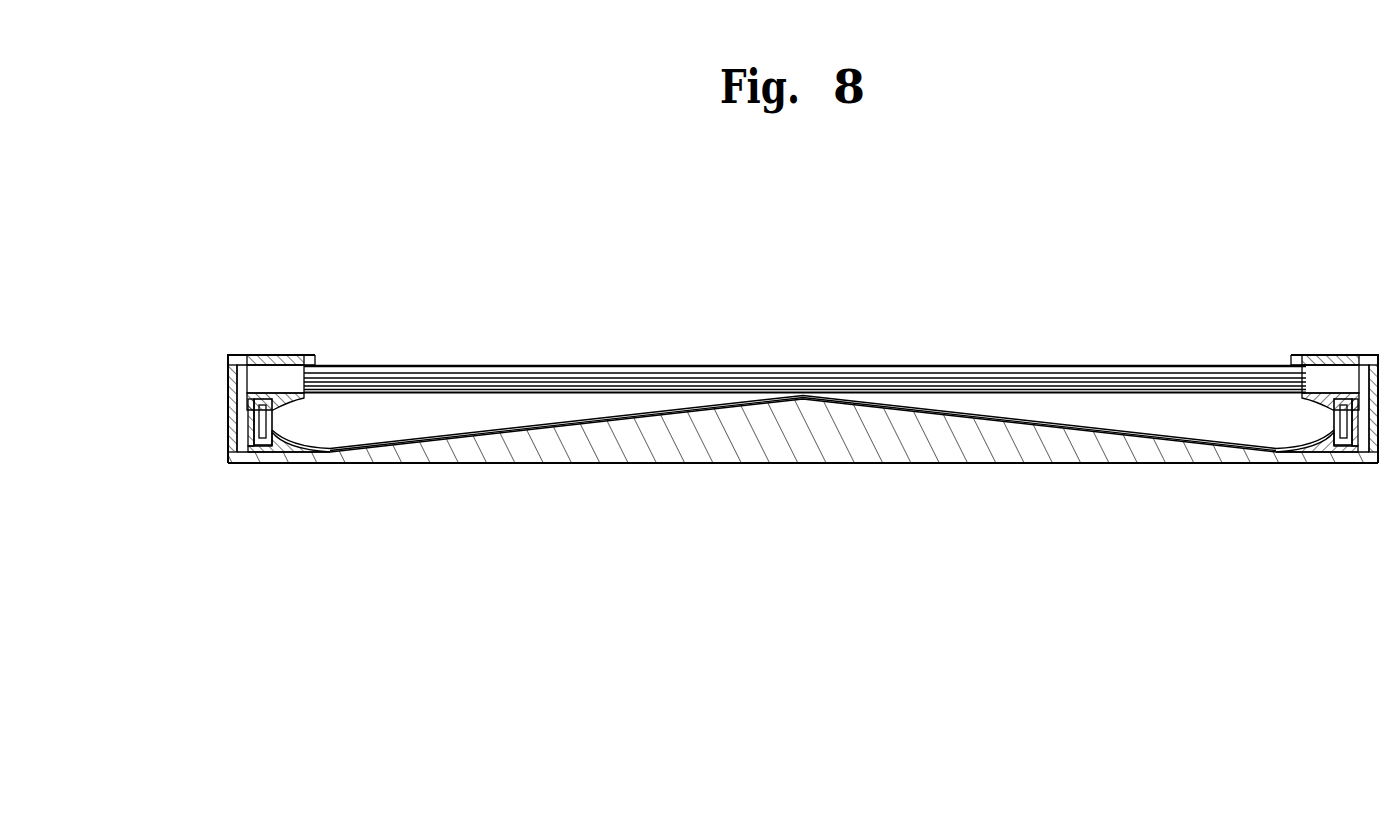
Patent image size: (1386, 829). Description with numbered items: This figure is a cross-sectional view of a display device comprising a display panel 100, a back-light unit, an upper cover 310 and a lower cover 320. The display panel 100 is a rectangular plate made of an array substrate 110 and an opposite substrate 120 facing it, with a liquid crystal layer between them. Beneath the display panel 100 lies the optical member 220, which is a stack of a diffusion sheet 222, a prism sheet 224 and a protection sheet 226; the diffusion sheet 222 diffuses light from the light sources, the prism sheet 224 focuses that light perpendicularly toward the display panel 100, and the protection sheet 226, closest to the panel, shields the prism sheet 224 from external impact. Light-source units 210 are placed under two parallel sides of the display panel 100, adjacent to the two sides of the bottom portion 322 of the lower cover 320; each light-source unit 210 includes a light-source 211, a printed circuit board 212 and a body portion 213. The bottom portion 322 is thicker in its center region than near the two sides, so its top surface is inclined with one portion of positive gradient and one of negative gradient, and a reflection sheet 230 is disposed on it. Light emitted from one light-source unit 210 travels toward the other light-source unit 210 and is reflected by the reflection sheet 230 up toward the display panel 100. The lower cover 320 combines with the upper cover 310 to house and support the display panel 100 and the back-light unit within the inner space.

The display panel 100 is at (805, 317).
The array substrate 110 is at (415, 298).
The opposite substrate 120 is at (420, 368).
The light-source unit 210 is at (215, 425).
The light-source 211 is at (253, 428).
The printed circuit board 212 is at (262, 418).
The body portion 213 is at (242, 383).
The optical member 220 is at (805, 325).
The diffusion sheet 222 is at (565, 298).
The prism sheet 224 is at (615, 387).
The protection sheet 226 is at (567, 383).
The reflection sheet 230 is at (510, 432).
The upper cover 310 is at (272, 362).
The lower cover 320 is at (652, 452).
The bottom portion 322 is at (578, 423).